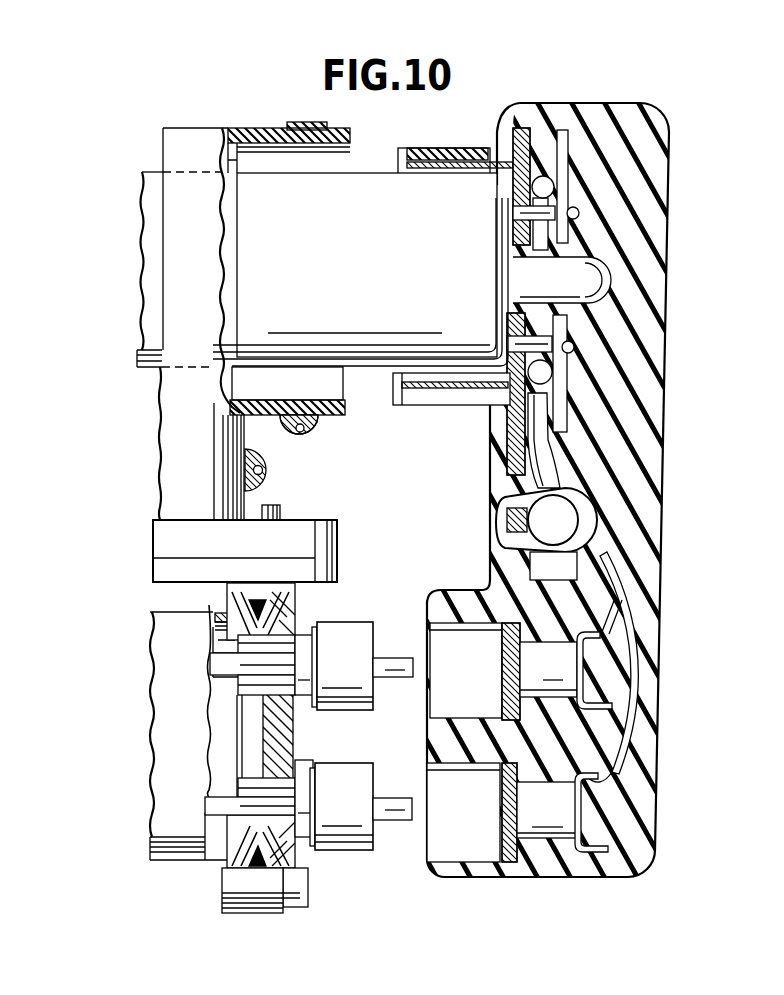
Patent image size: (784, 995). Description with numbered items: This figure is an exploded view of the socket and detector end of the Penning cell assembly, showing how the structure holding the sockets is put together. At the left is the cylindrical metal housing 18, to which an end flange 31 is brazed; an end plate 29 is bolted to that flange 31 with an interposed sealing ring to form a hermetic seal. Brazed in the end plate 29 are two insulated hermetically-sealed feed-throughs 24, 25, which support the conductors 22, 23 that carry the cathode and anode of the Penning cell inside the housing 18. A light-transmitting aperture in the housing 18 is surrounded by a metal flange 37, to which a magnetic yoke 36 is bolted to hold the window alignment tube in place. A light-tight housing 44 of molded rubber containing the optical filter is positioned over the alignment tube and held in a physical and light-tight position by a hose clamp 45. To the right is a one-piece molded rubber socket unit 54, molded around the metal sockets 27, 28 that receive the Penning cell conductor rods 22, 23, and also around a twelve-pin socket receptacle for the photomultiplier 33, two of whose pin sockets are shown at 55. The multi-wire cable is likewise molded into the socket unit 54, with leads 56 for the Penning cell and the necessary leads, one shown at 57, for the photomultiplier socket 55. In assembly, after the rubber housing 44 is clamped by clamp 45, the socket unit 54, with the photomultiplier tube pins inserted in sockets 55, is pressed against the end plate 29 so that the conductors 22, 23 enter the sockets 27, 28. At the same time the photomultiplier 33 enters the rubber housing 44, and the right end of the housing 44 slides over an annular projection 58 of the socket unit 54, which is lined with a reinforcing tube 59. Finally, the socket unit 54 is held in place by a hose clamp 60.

The cylindrical metal housing 18 is at (162, 860).
The conductor 22 is at (391, 660).
The conductor 23 is at (391, 800).
The insulated hermetically-sealed feed-through 24 is at (345, 632).
The insulated hermetically-sealed feed-through 25 is at (345, 775).
The metal socket 27 is at (537, 653).
The metal socket 28 is at (553, 826).
The end plate 29 is at (270, 897).
The end flange 31 is at (240, 888).
The photomultiplier 33 is at (150, 176).
The magnetic yoke 36 is at (340, 528).
The metal flange 37 is at (338, 574).
The light tight housing 44 is at (210, 138).
The hose clamp 45 is at (272, 472).
The socket unit 54 is at (680, 180).
The pin socket 55 is at (536, 335).
The lead 56 is at (606, 598).
The lead 57 is at (543, 469).
The annular projection 58 is at (447, 150).
The reinforcing tube 59 is at (440, 406).
The hose clamp 60 is at (318, 432).